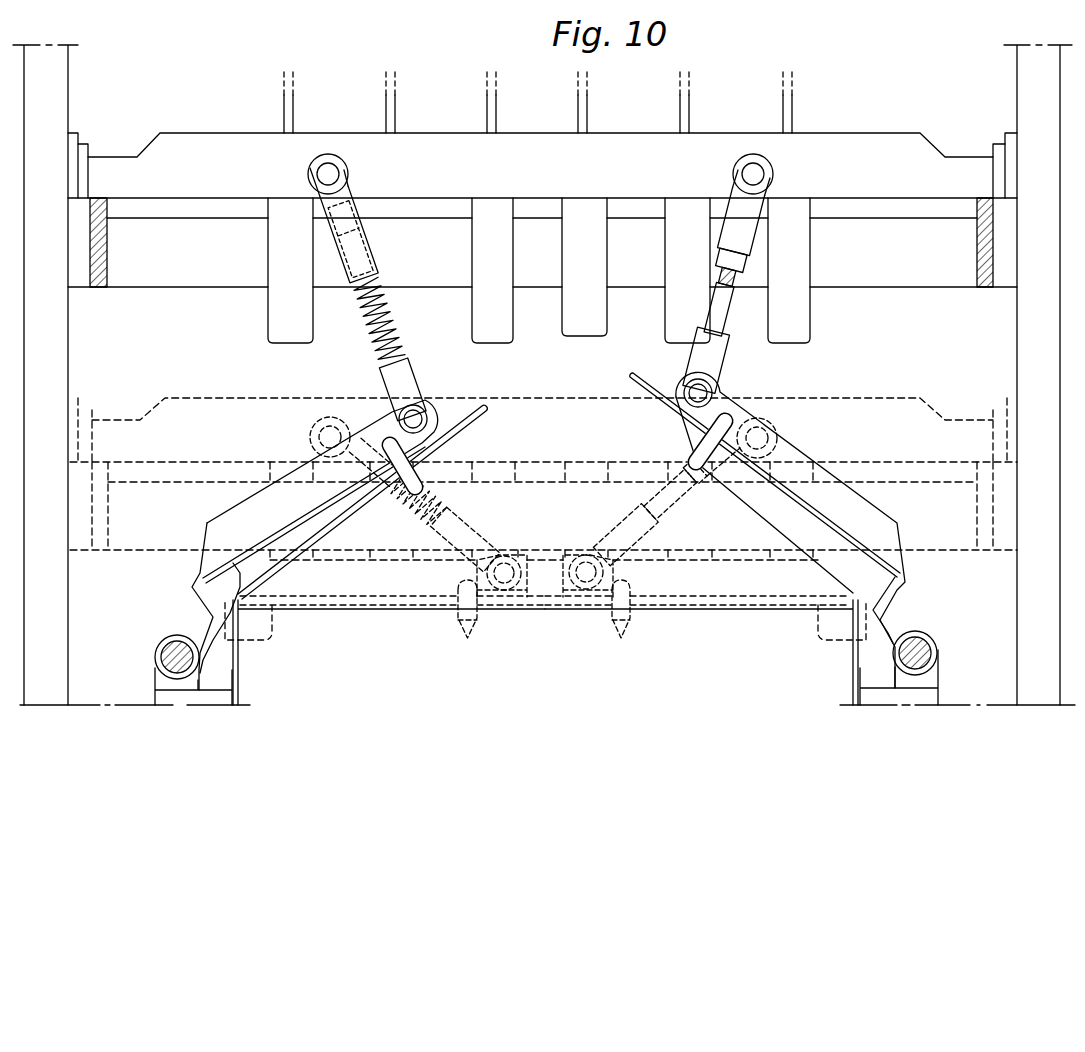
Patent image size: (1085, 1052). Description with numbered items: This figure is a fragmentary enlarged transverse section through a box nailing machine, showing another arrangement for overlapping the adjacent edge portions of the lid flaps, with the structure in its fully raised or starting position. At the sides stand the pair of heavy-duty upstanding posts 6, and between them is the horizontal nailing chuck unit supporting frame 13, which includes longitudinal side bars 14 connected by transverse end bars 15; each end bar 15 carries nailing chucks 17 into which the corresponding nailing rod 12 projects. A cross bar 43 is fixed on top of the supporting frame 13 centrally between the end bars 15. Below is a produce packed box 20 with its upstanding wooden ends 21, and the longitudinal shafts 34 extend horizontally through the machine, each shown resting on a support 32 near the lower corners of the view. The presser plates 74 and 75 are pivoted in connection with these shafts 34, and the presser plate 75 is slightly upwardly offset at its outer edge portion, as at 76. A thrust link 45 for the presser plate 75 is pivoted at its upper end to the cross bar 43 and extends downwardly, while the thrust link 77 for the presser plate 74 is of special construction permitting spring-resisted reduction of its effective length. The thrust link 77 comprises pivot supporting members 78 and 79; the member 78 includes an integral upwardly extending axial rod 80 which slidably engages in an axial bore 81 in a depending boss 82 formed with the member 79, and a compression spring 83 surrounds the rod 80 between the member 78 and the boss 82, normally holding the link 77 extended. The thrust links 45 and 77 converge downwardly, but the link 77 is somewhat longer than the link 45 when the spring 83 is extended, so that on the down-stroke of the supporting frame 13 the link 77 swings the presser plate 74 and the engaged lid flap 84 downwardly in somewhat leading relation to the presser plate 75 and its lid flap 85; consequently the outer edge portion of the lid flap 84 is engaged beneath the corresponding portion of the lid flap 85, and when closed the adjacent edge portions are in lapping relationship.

The upstanding posts 6 is at (55, 360).
The nailing rod 12 is at (487, 108).
The nailing chuck unit supporting frame 13 is at (215, 292).
The longitudinal side bars 14 is at (108, 252).
The transverse end bars 15 is at (865, 290).
The nailing chucks 17 is at (573, 239).
The produce packed box 20 is at (360, 608).
The wooden ends 21 is at (680, 623).
The base 32 is at (172, 697).
The longitudinal shafts 34 is at (160, 645).
The cross bar 43 is at (615, 150).
The thrust link 45 is at (718, 310).
The presser plate 74 is at (337, 545).
The presser plate 75 is at (765, 530).
The upward offset 76 is at (680, 423).
The thrust link 77 is at (358, 293).
The pivot supporting member 78 is at (393, 378).
The pivot supporting member 79 is at (308, 174).
The axial rod 80 is at (370, 322).
The axial bore 81 is at (358, 228).
The depending boss 82 is at (365, 200).
The compression spring 83 is at (390, 305).
The lid flap 84 is at (473, 425).
The lid flap 85 is at (747, 493).